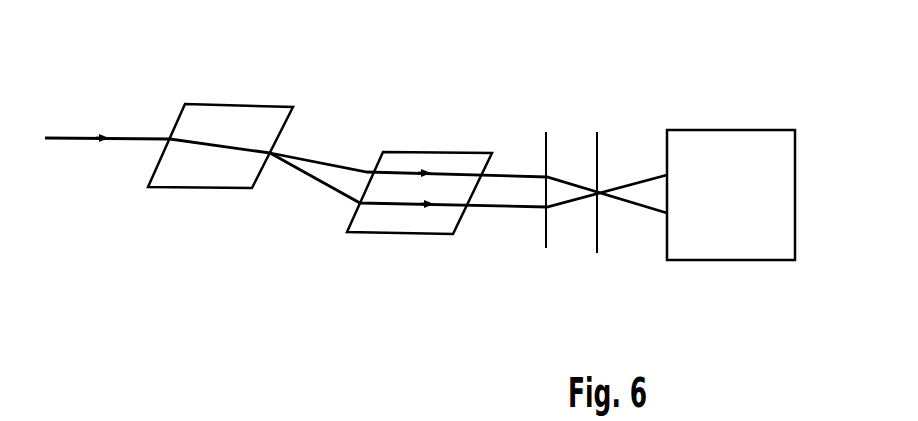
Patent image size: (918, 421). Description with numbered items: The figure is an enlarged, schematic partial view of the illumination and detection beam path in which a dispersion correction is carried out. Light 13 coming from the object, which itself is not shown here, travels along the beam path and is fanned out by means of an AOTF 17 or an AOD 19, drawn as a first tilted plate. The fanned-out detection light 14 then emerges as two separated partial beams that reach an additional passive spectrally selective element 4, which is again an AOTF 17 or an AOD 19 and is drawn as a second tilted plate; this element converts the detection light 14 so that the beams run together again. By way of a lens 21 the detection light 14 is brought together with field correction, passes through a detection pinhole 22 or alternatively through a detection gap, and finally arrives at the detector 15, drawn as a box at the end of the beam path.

The passive spectrally selective element 4 is at (329, 117).
The light 13 is at (132, 143).
The detection light 14 is at (330, 172).
The detector 15 is at (737, 262).
The AOTF 17 is at (329, 127).
The AOD 19 is at (262, 105).
The lens 21 is at (552, 157).
The detection pinhole 22 is at (600, 147).